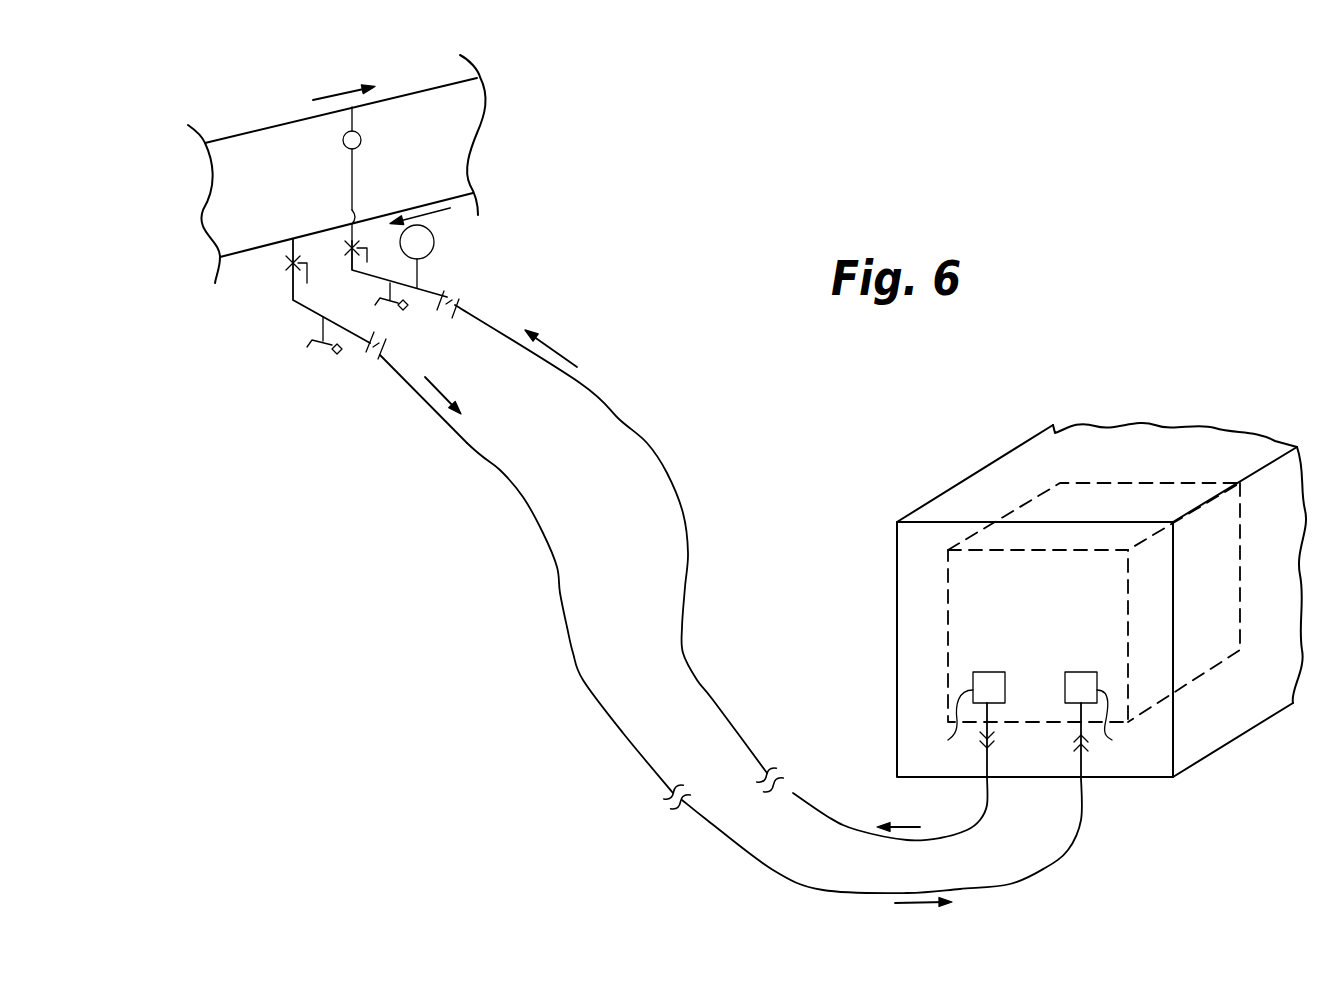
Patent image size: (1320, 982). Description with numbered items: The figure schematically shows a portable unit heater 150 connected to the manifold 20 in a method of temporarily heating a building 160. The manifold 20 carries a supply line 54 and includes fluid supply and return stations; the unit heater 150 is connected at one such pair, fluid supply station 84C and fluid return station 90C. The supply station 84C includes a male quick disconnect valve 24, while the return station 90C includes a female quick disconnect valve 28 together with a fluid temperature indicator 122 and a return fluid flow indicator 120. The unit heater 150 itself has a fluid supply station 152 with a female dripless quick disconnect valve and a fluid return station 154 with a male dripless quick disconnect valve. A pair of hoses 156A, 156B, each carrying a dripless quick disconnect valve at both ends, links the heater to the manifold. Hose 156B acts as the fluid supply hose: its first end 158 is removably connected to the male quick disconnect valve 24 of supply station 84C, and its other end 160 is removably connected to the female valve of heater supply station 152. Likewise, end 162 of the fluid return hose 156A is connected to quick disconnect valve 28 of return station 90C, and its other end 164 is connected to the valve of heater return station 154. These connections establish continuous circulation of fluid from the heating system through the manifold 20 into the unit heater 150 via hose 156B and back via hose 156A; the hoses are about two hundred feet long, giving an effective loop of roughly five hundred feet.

The manifold 20 is at (337, 145).
The supply line 54 is at (380, 217).
The return fluid flow indicator 120 is at (361, 136).
The fluid return station 90C is at (308, 198).
The fluid temperature indicator 122 is at (436, 242).
The end of fluid return hose 162 is at (428, 309).
The female quick disconnect valve 28 is at (447, 288).
The fluid supply station 84C is at (295, 319).
The male quick disconnect valve 24 is at (367, 350).
The first end of hose 158 is at (383, 367).
The fluid return hose 156A is at (657, 460).
The fluid supply hose 156B is at (560, 590).
The unit heater 150 is at (1213, 573).
The other end of hose 160 is at (1081, 790).
The other end of hose 164 is at (988, 790).
The fluid return station 154 is at (939, 724).
The fluid supply station 152 is at (1124, 724).